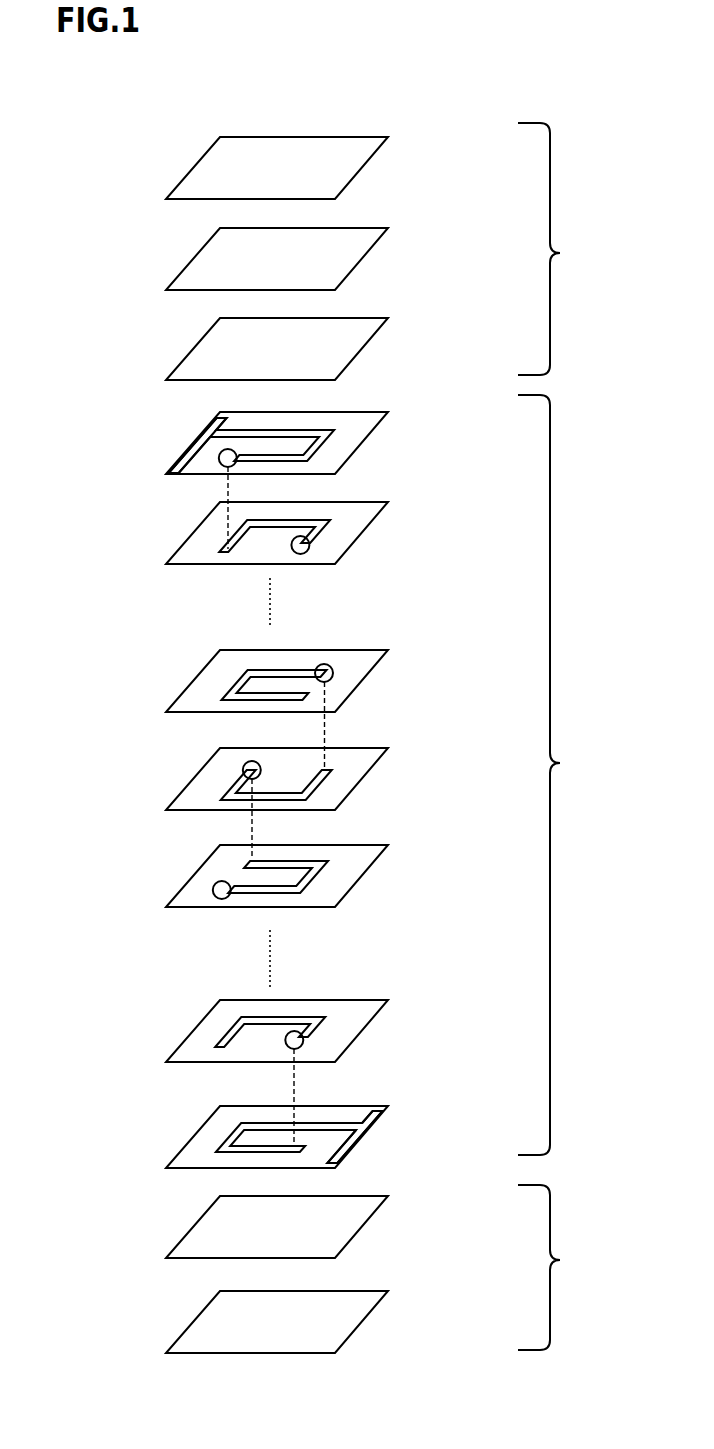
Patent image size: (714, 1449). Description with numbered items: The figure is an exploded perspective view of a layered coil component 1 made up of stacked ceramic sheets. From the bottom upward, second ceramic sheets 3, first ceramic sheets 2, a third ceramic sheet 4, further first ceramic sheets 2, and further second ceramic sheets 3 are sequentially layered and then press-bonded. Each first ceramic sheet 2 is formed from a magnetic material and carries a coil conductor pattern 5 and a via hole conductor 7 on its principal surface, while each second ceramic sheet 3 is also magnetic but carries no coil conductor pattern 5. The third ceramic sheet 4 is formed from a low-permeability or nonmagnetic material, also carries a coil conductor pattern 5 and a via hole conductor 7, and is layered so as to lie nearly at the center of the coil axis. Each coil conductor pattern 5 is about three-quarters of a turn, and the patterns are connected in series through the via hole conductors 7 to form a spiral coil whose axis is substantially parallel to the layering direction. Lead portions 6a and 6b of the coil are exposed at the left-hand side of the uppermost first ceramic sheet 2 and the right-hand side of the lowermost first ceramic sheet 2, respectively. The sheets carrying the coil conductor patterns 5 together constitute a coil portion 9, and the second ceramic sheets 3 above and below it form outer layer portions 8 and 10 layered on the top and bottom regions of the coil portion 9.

The layered coil component 1 is at (70, 95).
The first ceramic sheet 2 is at (342, 447).
The second ceramic sheet 3 is at (224, 170).
The third ceramic sheet 4 is at (345, 777).
The coil conductor pattern 5 is at (320, 433).
The lead portion 6a is at (202, 440).
The lead portion 6b is at (358, 1135).
The via hole conductor 7 is at (227, 467).
The outer layer portion 8 is at (553, 249).
The coil portion 9 is at (363, 765).
The outer layer portion 10 is at (556, 1267).